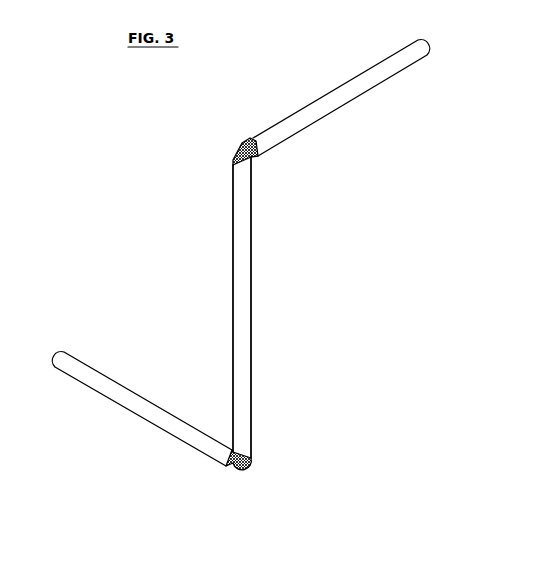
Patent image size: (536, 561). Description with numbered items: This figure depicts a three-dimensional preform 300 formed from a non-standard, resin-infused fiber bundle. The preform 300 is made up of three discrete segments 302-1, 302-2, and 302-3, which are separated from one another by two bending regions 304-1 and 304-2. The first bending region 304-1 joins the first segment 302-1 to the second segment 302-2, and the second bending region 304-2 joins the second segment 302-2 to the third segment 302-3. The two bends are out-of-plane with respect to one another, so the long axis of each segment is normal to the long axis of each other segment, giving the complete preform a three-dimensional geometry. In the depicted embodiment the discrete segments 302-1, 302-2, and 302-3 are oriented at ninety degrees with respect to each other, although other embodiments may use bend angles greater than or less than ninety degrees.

The 3D preform 300 is at (171, 194).
The discrete segment 302-1 is at (117, 383).
The discrete segment 302-2 is at (252, 402).
The discrete segment 302-3 is at (346, 103).
The bending region 304-1 is at (266, 470).
The bending region 304-2 is at (228, 147).